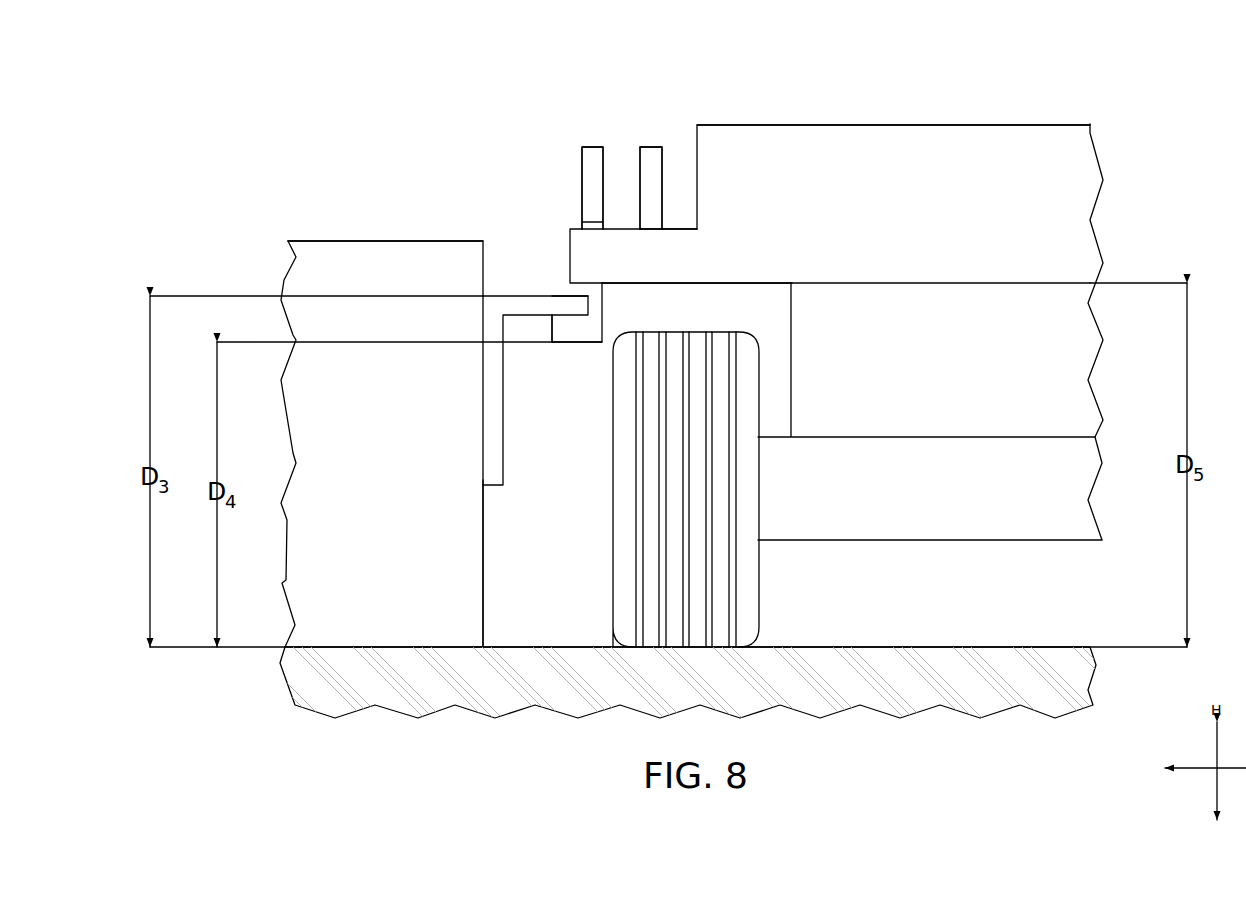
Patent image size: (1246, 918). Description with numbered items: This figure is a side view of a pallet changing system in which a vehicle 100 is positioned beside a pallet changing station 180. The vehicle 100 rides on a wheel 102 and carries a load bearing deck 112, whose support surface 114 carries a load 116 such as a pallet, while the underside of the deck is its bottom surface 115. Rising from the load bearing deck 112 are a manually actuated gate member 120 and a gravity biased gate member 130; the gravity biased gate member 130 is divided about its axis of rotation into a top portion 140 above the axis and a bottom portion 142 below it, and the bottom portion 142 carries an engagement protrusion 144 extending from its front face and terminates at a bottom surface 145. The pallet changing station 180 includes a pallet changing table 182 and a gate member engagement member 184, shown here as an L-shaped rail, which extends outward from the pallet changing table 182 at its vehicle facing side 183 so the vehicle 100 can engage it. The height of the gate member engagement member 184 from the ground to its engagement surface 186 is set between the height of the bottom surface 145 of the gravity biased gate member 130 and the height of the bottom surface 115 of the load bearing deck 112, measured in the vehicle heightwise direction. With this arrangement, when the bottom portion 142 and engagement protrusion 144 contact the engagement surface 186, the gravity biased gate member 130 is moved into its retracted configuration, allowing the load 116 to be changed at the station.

The vehicle 100 is at (1055, 92).
The wheel 102 is at (758, 588).
The load bearing deck 112 is at (690, 245).
The support surface 114 is at (677, 222).
The bottom surface of the load bearing deck 115 is at (664, 283).
The load 116 is at (760, 125).
The manually actuated gate member 120 is at (652, 150).
The gravity biased gate member 130 is at (578, 178).
The top portion 140 is at (590, 150).
The bottom portion 142 is at (590, 320).
The engagement protrusion 144 is at (558, 323).
The bottom surface of the gravity biased gate member 145 is at (570, 345).
The pallet changing station 180 is at (307, 216).
The pallet changing table 182 is at (402, 240).
The vehicle facing side 183 is at (483, 590).
The gate member engagement member 184 is at (510, 302).
The engagement surface 186 is at (551, 295).